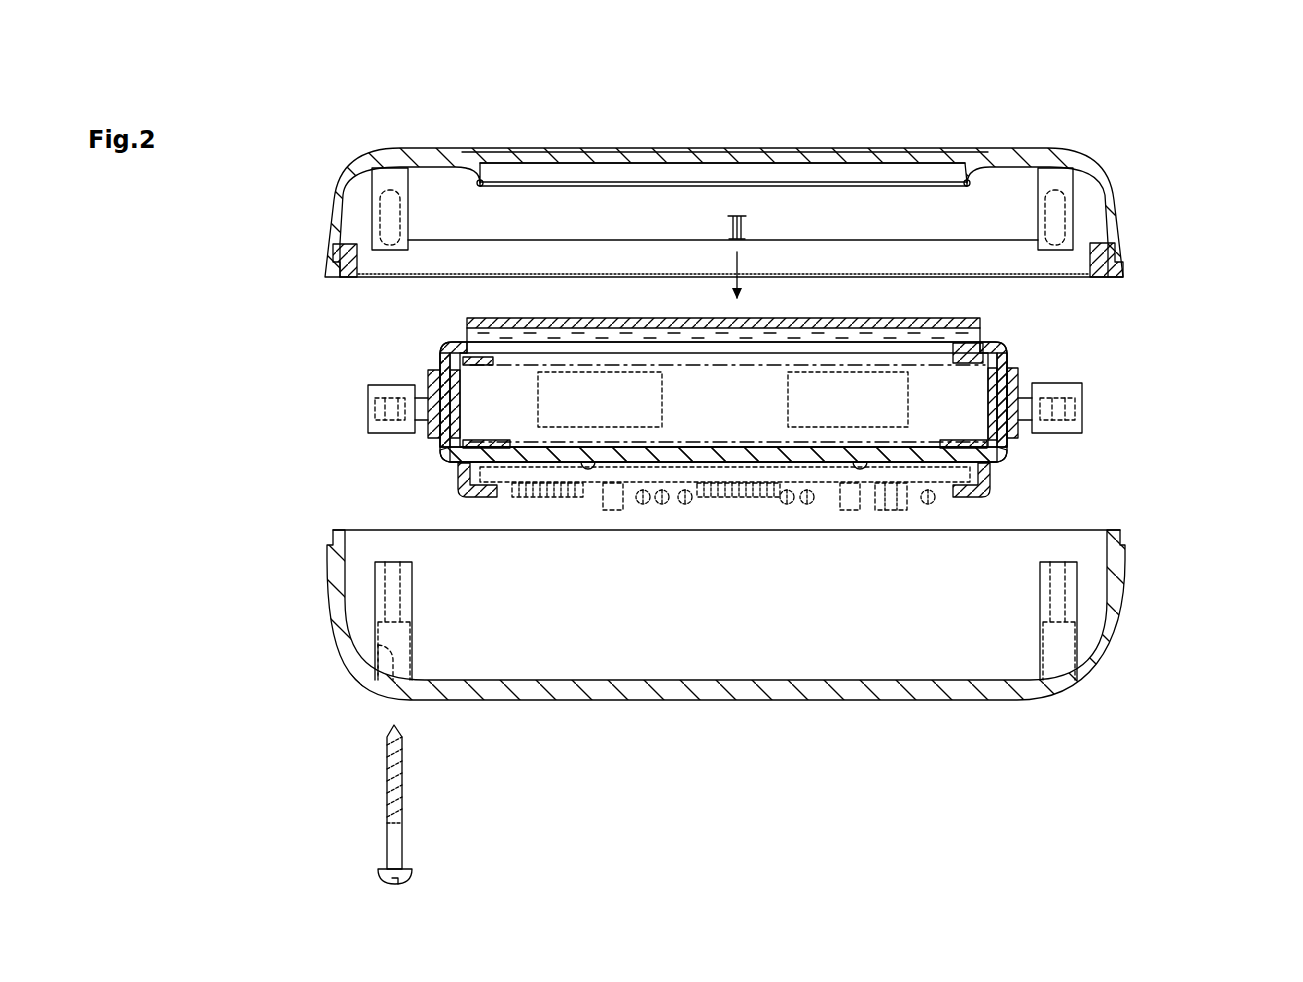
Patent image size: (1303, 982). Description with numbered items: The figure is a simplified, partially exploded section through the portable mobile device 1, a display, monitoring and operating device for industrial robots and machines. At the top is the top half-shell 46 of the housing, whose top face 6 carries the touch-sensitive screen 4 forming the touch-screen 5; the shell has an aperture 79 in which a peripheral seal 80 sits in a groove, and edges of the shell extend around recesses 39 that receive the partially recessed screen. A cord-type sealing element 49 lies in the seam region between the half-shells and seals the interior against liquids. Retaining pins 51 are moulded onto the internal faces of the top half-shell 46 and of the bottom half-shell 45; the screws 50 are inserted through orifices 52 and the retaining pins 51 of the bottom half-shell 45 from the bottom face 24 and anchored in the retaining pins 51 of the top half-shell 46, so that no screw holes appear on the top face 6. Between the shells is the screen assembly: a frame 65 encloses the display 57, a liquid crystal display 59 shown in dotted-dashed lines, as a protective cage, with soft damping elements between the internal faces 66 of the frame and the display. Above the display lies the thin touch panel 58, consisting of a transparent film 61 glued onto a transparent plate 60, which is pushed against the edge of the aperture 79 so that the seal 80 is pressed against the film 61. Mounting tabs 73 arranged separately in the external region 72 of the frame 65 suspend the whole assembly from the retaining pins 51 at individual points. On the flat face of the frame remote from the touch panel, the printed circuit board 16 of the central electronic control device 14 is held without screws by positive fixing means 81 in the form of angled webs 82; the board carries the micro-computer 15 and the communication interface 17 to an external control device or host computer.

The portable or mobile device 1 is at (1093, 123).
The touch-sensitive screen 4 is at (1070, 327).
The touch-screen 5 is at (1073, 350).
The top face 6 is at (388, 133).
The central electronic control device 14 is at (586, 502).
The micro-computer 15 is at (727, 493).
The printed circuit board 16 is at (828, 468).
The communication interface 17 is at (890, 517).
The bottom face 24 is at (620, 702).
The recesses 39 is at (483, 175).
The bottom half-shell 45 is at (1128, 668).
The top half-shell 46 is at (1137, 178).
The cord-type sealing element 49 is at (347, 277).
The screw 50 is at (395, 845).
The retaining pin 51 is at (378, 213).
The orifice 52 is at (377, 680).
The display 57 is at (470, 358).
The touch panel 58 is at (998, 322).
The liquid crystal display 59 is at (722, 400).
The transparent plate 60 is at (827, 322).
The transparent film 61 is at (917, 318).
The frame 65 is at (1030, 447).
The internal faces 66 is at (433, 383).
The external region 72 is at (428, 435).
The mounting tab 73 is at (357, 410).
The aperture 79 is at (926, 165).
The peripheral seal 80 is at (572, 185).
The positive fixing means 81 is at (1005, 488).
The angled webs 82 is at (962, 487).